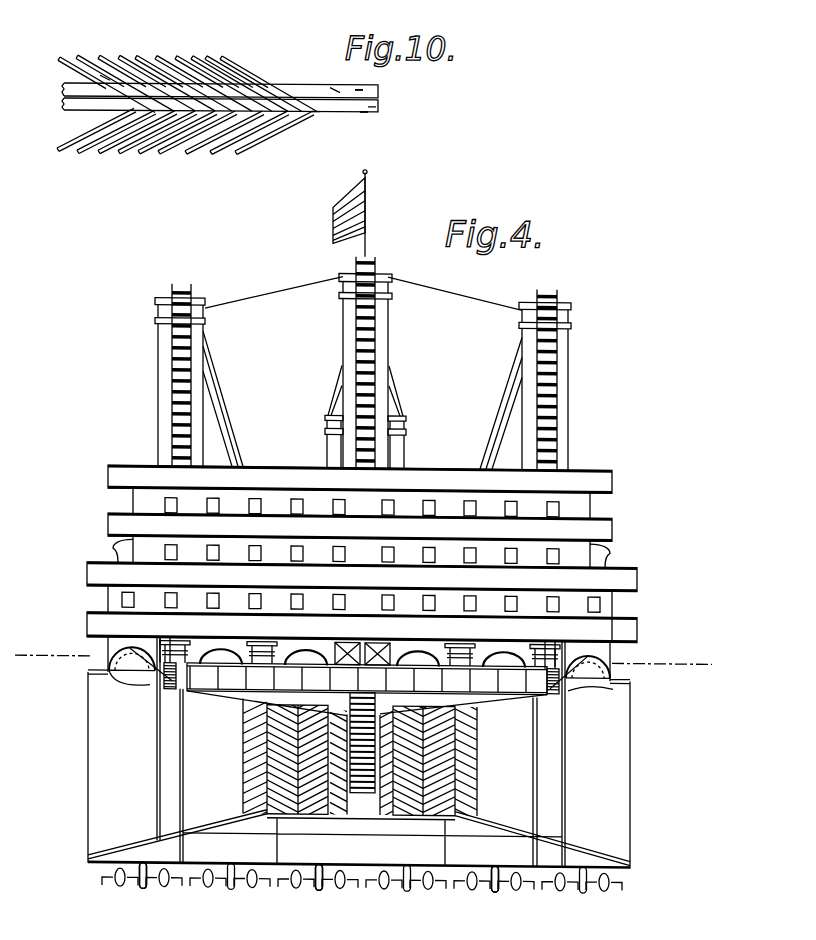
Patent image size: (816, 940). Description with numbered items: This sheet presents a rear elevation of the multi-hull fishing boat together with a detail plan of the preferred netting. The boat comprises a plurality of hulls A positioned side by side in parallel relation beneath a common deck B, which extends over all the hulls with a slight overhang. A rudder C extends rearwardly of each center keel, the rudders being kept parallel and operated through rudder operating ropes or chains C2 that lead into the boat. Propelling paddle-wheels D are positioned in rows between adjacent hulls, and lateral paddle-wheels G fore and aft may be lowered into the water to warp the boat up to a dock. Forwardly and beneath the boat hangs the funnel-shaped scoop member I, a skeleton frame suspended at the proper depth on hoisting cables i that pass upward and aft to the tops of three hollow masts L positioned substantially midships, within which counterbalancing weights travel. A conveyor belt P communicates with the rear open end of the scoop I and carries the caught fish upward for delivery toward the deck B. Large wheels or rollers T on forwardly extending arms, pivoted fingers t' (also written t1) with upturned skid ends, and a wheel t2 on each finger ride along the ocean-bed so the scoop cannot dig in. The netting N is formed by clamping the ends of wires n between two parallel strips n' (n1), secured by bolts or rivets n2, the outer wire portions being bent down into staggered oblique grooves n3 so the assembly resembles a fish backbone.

In FIG. 10, the netting N is at (220, 136).
In FIG. 10, the wires n is at (187, 112).
In FIG. 4, the wires n is at (353, 758).
In FIG. 10, the bolts or rivets n2 is at (108, 78).
In FIG. 10, the parallel strips n' is at (383, 117).
In FIG. 10, the slat ends n1 is at (383, 117).
In FIG. 10, the oblique grooves n3 is at (373, 107).
In FIG. 4, the hollow masts L is at (157, 347).
In FIG. 4, the hoisting cables i is at (212, 427).
In FIG. 4, the common deck B is at (87, 628).
In FIG. 4, the hulls A is at (244, 643).
In FIG. 4, the rudder operating ropes or chains C2 is at (372, 650).
In FIG. 4, the rudder C is at (255, 677).
In FIG. 4, the lateral propellers (lateral paddle-wheels) G is at (152, 687).
In FIG. 4, the paddle-wheels D is at (170, 692).
In FIG. 4, the scoop member I is at (86, 770).
In FIG. 4, the conveyor belt P is at (363, 787).
In FIG. 4, the wheels or rollers T is at (405, 886).
In FIG. 4, the pivoted fingers t' is at (298, 888).
In FIG. 4, the truck hangers t1 is at (298, 888).
In FIG. 4, the wheel t2 is at (250, 888).